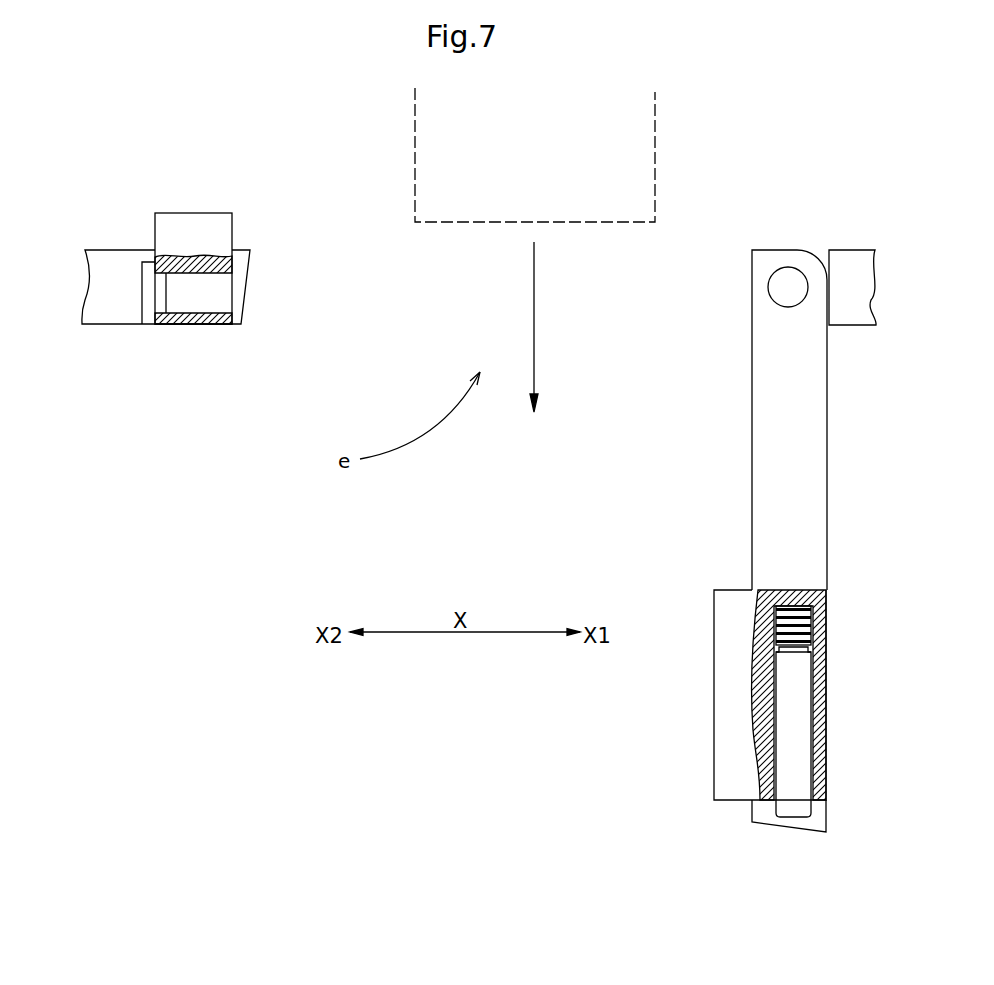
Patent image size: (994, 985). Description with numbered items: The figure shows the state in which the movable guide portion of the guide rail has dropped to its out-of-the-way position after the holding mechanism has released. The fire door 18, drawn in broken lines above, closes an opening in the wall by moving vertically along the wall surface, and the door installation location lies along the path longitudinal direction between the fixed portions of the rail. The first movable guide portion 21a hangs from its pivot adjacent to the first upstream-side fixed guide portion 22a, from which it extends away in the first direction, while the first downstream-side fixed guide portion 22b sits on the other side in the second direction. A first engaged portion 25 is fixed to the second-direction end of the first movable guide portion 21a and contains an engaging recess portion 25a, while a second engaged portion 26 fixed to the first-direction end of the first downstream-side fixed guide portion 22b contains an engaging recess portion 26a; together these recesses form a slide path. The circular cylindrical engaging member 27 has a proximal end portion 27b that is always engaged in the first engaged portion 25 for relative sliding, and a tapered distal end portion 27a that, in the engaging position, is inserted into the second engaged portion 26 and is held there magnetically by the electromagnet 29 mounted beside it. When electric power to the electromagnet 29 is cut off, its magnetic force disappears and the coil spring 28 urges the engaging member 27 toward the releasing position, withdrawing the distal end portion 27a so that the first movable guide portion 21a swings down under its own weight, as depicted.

The fire door 18 is at (655, 200).
The first downstream-side fixed guide portion 22b is at (123, 315).
The electromagnet 29 is at (142, 285).
The second engaged portion 26 is at (182, 220).
The engaging recess portion 26a is at (208, 258).
The first upstream-side fixed guide portion 22a is at (842, 258).
The first movable guide portion 21a is at (767, 433).
The first engaged portion 25 is at (722, 730).
The engaging recess portion 25a is at (762, 767).
The coil spring 28 is at (813, 635).
The engaging member 27 is at (823, 752).
The proximal end portion 27b is at (803, 658).
The distal end portion 27a is at (788, 812).